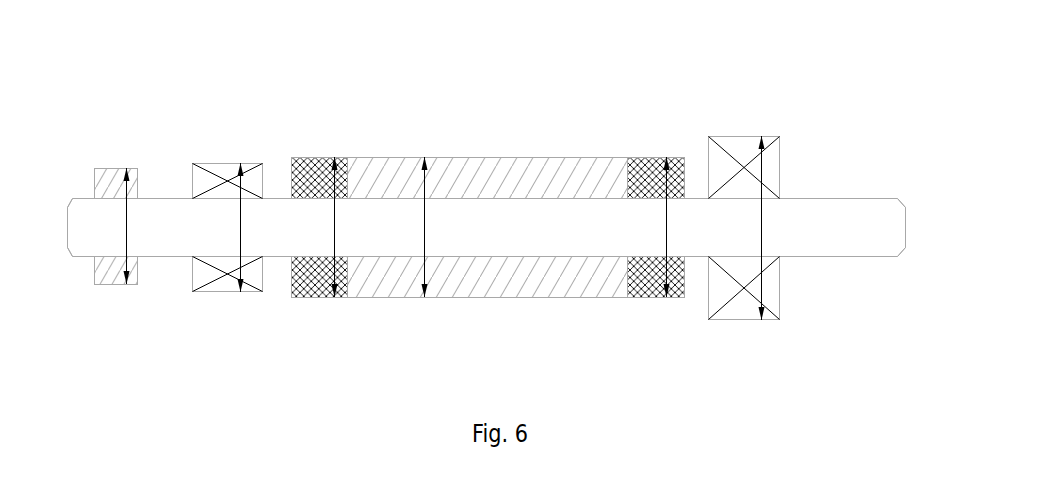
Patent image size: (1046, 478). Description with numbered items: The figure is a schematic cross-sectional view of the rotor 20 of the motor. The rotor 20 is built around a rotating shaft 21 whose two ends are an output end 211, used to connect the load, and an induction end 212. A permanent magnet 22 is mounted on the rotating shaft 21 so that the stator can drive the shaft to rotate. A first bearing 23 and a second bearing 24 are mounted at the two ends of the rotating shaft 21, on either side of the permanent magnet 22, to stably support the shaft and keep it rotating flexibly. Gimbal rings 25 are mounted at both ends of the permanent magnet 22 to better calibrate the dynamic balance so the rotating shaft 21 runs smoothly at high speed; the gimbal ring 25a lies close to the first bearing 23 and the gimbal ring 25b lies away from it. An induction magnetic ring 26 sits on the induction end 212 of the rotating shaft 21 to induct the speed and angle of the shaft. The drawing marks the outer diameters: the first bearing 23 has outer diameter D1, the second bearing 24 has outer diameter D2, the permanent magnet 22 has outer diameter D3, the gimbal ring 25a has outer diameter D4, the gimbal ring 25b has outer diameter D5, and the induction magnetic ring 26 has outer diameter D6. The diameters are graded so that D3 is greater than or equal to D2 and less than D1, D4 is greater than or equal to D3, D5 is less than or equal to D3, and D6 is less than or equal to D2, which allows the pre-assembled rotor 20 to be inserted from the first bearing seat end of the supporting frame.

The rotor 20 is at (264, 62).
The rotating shaft 21 is at (475, 225).
The output end 211 is at (883, 245).
The induction end 212 is at (75, 218).
The permanent magnet 22 is at (543, 280).
The first bearing 23 is at (737, 300).
The second bearing 24 is at (227, 291).
The gimbal rings 25 is at (484, 279).
The gimbal ring close to the first bearing 25a is at (652, 290).
The gimbal ring away from the first bearing 25b is at (310, 297).
The induction magnetic ring 26 is at (113, 285).
The outer diameter of the first bearing D1 is at (746, 228).
The outer diameter of the second bearing D2 is at (222, 227).
The outer diameter of the permanent magnet D3 is at (407, 227).
The outer diameter of the gimbal ring close to the first bearing D4 is at (650, 227).
The outer diameter of the gimbal ring away from the first bearing D5 is at (317, 227).
The outer diameter of the induction magnetic ring D6 is at (110, 226).